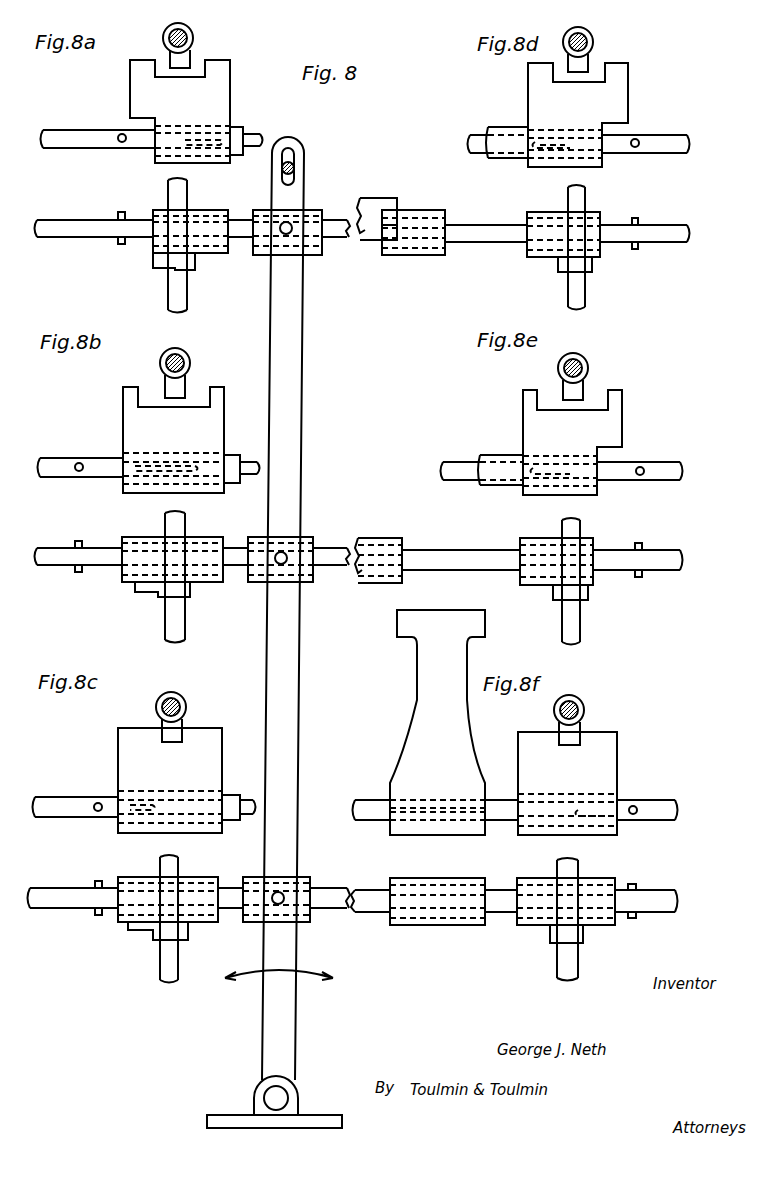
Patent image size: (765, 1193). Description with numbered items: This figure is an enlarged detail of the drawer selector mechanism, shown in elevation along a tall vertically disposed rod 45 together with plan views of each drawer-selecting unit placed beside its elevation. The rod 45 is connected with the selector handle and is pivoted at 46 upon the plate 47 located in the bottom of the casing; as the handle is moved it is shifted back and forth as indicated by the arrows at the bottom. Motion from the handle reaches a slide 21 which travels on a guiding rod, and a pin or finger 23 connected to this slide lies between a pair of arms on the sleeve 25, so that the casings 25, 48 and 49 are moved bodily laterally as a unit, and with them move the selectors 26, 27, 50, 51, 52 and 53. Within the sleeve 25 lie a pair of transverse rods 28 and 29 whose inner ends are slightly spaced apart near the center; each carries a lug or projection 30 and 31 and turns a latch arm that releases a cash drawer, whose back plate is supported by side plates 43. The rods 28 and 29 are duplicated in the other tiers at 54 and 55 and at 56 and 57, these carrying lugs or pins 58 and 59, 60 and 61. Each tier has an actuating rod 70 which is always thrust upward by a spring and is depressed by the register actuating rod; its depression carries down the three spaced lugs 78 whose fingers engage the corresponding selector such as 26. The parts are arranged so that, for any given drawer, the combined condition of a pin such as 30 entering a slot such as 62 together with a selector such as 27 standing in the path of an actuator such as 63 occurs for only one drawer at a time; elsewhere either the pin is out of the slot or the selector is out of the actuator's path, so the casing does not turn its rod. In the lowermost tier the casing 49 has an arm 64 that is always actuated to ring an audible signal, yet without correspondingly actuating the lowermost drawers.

In FIG. 8, the slide 21 is at (292, 165).
In FIG. 8, the pin or finger 23 is at (291, 224).
In FIG. 8, the sleeve 25 is at (246, 213).
In FIG. 8A, the sleeve 25 is at (236, 127).
In FIG. 8D, the sleeve 25 is at (500, 158).
In FIG. 8, the selector 26 is at (195, 211).
In FIG. 8A, the selector 26 is at (200, 107).
In FIG. 8, the selector 27 is at (598, 218).
In FIG. 8D, the selector 27 is at (593, 112).
In FIG. 8, the rod 28 is at (673, 229).
In FIG. 8D, the rod 28 is at (672, 144).
In FIG. 8, the rod 29 is at (64, 227).
In FIG. 8A, the rod 29 is at (60, 149).
In FIG. 8, the lug or projection 30 is at (638, 218).
In FIG. 8D, the lug or projection 30 is at (638, 140).
In FIG. 8, the lug or projection 31 is at (122, 213).
In FIG. 8A, the lug or projection 31 is at (122, 143).
In FIG. 8, the side plates 43 is at (157, 262).
In FIG. 8, the vertically disposed rod 45 is at (286, 388).
In FIG. 8, the pivot 46 is at (282, 1100).
In FIG. 8, the plate 47 is at (320, 1122).
In FIG. 8, the casing 48 is at (240, 541).
In FIG. 8B, the casing 48 is at (232, 455).
In FIG. 8E, the casing 48 is at (497, 457).
In FIG. 8, the casing 49 is at (240, 881).
In FIG. 8C, the casing 49 is at (232, 796).
In FIG. 8F, the casing 49 is at (496, 798).
In FIG. 8, the selector 50 is at (195, 543).
In FIG. 8B, the selector 50 is at (193, 435).
In FIG. 8, the selector 51 is at (592, 549).
In FIG. 8E, the selector 51 is at (589, 445).
In FIG. 8, the selector 52 is at (195, 880).
In FIG. 8C, the selector 52 is at (189, 776).
In FIG. 8, the selector 53 is at (592, 888).
In FIG. 8F, the selector 53 is at (583, 774).
In FIG. 8, the rod 54 is at (666, 563).
In FIG. 8E, the rod 54 is at (665, 470).
In FIG. 8, the rod 55 is at (50, 553).
In FIG. 8B, the rod 55 is at (56, 460).
In FIG. 8, the rod 56 is at (66, 892).
In FIG. 8C, the rod 56 is at (54, 800).
In FIG. 8, the rod 57 is at (660, 900).
In FIG. 8F, the rod 57 is at (660, 812).
In FIG. 8, the lug or pin 58 is at (643, 553).
In FIG. 8E, the lug or pin 58 is at (643, 466).
In FIG. 8, the lug or pin 59 is at (84, 543).
In FIG. 8B, the lug or pin 59 is at (82, 472).
In FIG. 8, the lug or pin 60 is at (640, 890).
In FIG. 8F, the lug or pin 60 is at (637, 806).
In FIG. 8, the lug or pin 61 is at (100, 885).
In FIG. 8C, the lug or pin 61 is at (99, 802).
In FIG. 8D, the slot 62 is at (555, 155).
In FIG. 8, the actuator 63 is at (576, 247).
In FIG. 8D, the actuator 63 is at (590, 64).
In FIG. 8, the arm 64 is at (435, 922).
In FIG. 8F, the arm 64 is at (425, 702).
In FIG. 8, the actuating rod 70 is at (180, 287).
In FIG. 8A, the actuating rod 70 is at (194, 36).
In FIG. 8B, the actuating rod 70 is at (191, 360).
In FIG. 8C, the actuating rod 70 is at (186, 705).
In FIG. 8A, the spaced lugs 78 is at (192, 60).